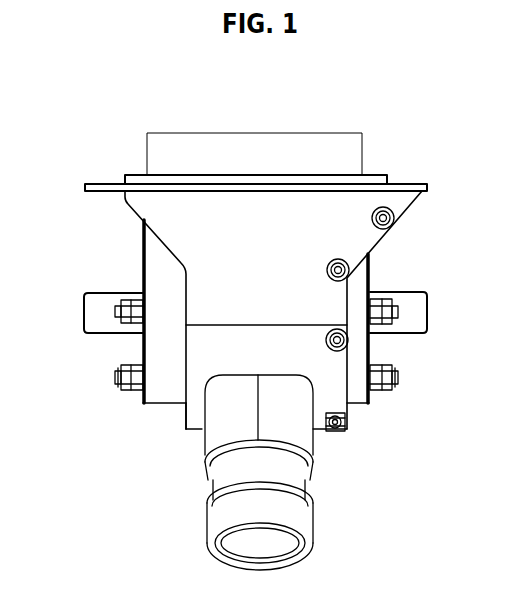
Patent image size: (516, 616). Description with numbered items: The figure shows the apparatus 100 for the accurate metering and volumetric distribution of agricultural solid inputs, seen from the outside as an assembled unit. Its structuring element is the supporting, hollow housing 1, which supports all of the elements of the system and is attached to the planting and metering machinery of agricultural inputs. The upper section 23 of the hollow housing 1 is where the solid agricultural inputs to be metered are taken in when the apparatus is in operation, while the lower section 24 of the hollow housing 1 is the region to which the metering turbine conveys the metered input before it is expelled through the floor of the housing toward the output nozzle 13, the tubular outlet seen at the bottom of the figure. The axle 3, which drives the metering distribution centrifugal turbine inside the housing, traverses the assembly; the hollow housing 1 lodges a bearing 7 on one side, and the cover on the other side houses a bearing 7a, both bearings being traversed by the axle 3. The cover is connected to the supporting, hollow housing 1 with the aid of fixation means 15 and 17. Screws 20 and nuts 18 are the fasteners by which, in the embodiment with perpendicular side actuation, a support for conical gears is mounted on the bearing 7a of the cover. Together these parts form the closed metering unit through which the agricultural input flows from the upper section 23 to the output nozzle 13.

The apparatus 100 is at (402, 127).
The supporting, hollow housing 1 is at (310, 227).
The upper section 23 is at (258, 133).
The axle 3 is at (98, 311).
The bearing 7 is at (161, 342).
The bearing 7a is at (359, 343).
The nuts 18 is at (133, 383).
The screws 20 is at (117, 378).
The lower section 24 is at (198, 388).
The output nozzle 13 is at (252, 501).
The fixation means 15 is at (337, 433).
The fixation means 17 is at (347, 427).